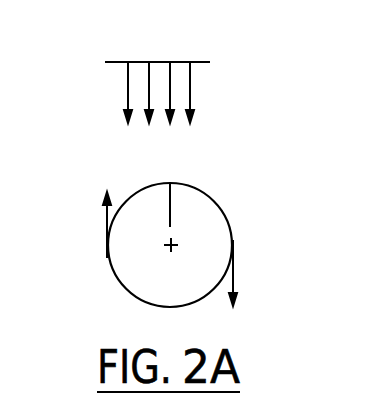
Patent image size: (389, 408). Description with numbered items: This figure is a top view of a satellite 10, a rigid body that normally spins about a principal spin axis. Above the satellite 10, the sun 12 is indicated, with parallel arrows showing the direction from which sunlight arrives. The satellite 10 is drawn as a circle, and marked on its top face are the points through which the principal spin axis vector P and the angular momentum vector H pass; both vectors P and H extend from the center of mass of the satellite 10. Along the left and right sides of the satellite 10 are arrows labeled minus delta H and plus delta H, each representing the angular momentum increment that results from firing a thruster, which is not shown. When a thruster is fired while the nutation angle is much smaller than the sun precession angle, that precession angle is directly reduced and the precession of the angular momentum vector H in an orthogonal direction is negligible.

The satellite 10 is at (172, 229).
The sun 12 is at (203, 62).
The principal spin axis vector P is at (190, 224).
The angular momentum vector H is at (147, 212).